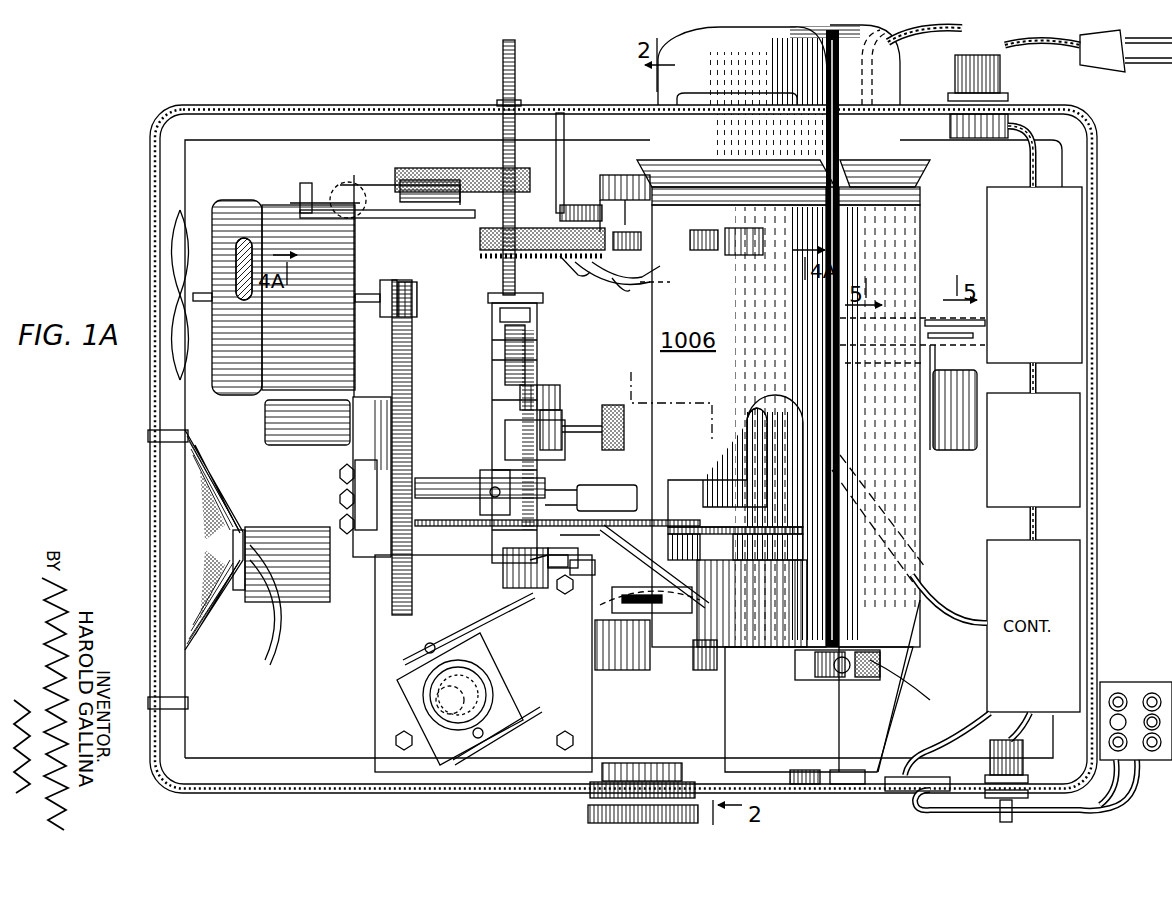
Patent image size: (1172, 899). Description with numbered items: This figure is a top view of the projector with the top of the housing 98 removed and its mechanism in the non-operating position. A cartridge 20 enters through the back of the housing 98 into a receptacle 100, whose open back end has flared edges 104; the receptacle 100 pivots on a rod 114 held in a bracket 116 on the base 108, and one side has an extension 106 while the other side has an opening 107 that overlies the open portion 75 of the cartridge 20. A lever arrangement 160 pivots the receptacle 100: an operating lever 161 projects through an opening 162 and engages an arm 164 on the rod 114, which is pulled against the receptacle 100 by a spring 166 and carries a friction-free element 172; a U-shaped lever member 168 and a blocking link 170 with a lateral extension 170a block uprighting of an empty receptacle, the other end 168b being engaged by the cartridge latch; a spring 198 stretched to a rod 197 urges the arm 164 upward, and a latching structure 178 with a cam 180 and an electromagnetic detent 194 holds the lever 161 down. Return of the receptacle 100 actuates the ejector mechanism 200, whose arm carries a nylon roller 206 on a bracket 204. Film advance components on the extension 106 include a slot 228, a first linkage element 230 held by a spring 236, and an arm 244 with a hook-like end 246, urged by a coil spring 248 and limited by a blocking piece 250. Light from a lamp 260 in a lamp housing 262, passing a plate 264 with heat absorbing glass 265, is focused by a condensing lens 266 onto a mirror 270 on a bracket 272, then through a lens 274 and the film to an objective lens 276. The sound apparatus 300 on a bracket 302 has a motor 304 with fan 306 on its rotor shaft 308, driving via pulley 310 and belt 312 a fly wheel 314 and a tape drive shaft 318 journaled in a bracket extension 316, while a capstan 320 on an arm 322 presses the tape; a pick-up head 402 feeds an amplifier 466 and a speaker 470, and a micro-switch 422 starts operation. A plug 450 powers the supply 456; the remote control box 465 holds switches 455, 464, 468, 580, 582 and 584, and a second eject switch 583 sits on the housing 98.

The projector housing 98 is at (366, 104).
The receptacle 100 is at (928, 240).
The cartridge 20 is at (905, 90).
The plug 450 is at (1092, 72).
The operating lever 161 is at (510, 80).
The opening 162 is at (512, 92).
The lever latching structure 178 is at (468, 160).
The cam 180 is at (450, 178).
The electromagnetically operated detent 194 is at (295, 180).
The rod 197 is at (563, 128).
The spring 198 is at (576, 203).
The friction-free element 172 is at (618, 170).
The arm 164 is at (550, 262).
The blocking link 170 is at (692, 242).
The spring 166 is at (730, 255).
The other end of lever member 168b is at (643, 272).
The lateral extension 170a is at (612, 285).
The lever arrangement 160 is at (560, 280).
The U-shaped lever member 168 is at (625, 300).
The flared edges 104 is at (720, 170).
The electric motor 304 is at (240, 392).
The cooling fan 306 is at (175, 238).
The bracket 302 is at (325, 448).
The belt 312 is at (408, 347).
The fly wheel 314 is at (413, 437).
The rotor shaft 308 is at (383, 280).
The pulley 310 is at (412, 283).
The sound tape drive and pick-up apparatus 300 is at (485, 343).
The bracket extension 316 is at (520, 460).
The arm 322 is at (560, 415).
The capstan 320 is at (612, 403).
The tape drive shaft 318 is at (600, 486).
The bracket 272 is at (600, 536).
The mirror 270 is at (640, 555).
The micro-switch 422 is at (503, 572).
The lens 274 is at (612, 605).
The pick-up head 402 is at (640, 505).
The opening 107 is at (747, 455).
The open portion 75 is at (750, 437).
The cartridge ejector mechanism 200 is at (932, 318).
The nylon roller 206 is at (932, 330).
The bracket 204 is at (930, 450).
The amplifier 466 is at (1090, 300).
The A.C.-D.C. converter and D.C. power supply 456 is at (1082, 463).
The remote control box 465 is at (1118, 700).
The normally closed switch 455 is at (1112, 693).
The normally closed switch 468 is at (1155, 693).
The normally closed switch 584 is at (1146, 716).
The push-button switch 580 is at (1120, 752).
The push-button switch 582 is at (1150, 752).
The normally closed switch 464 is at (1128, 790).
The second switch 583 is at (990, 762).
The blocking piece 250 is at (880, 668).
The extension 106 is at (819, 709).
The slot 228 is at (795, 665).
The hook-like end 246 is at (795, 655).
The arm 244 is at (820, 680).
The coil spring 248 is at (840, 685).
The spring 236 is at (808, 785).
The first element 230 is at (848, 785).
The objective lens 276 is at (588, 814).
The bracket 116 is at (622, 645).
The rod 114 is at (705, 670).
The base 108 is at (455, 663).
The lamp housing 262 is at (398, 686).
The plate 264 is at (488, 603).
The condensing lens 266 is at (520, 728).
The lamp 260 is at (450, 660).
The heat absorbing glass 265 is at (580, 690).
The speaker 470 is at (192, 660).